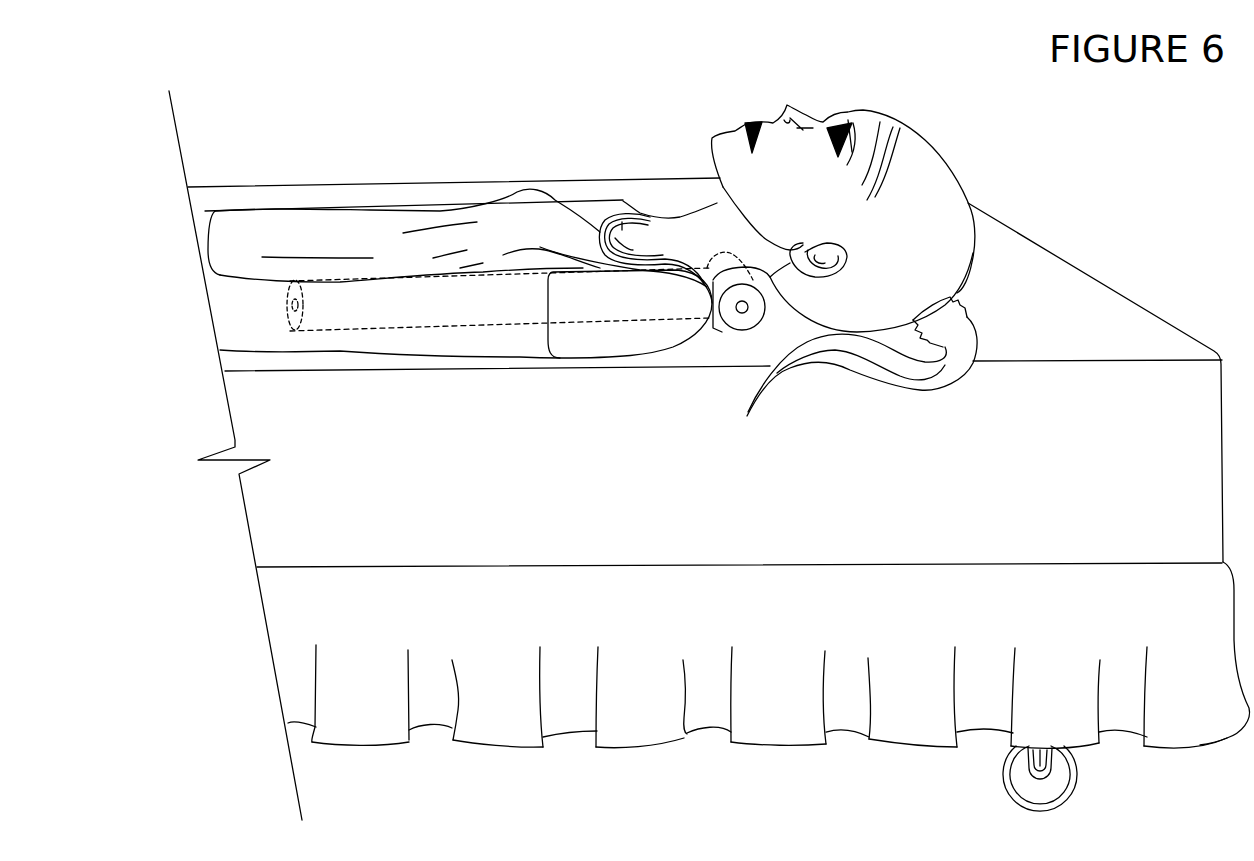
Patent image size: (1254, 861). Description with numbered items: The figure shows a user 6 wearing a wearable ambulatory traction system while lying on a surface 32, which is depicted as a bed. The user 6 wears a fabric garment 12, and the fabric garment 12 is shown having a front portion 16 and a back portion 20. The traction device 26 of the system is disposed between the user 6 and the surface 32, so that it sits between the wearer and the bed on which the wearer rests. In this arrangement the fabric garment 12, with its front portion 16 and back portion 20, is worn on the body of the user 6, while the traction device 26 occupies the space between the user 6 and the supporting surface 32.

The user 6 is at (942, 178).
The fabric garment 12 is at (632, 203).
The front portion 16 is at (357, 213).
The back portion 20 is at (620, 367).
The traction device 26 is at (718, 336).
The surface 32 is at (1070, 293).